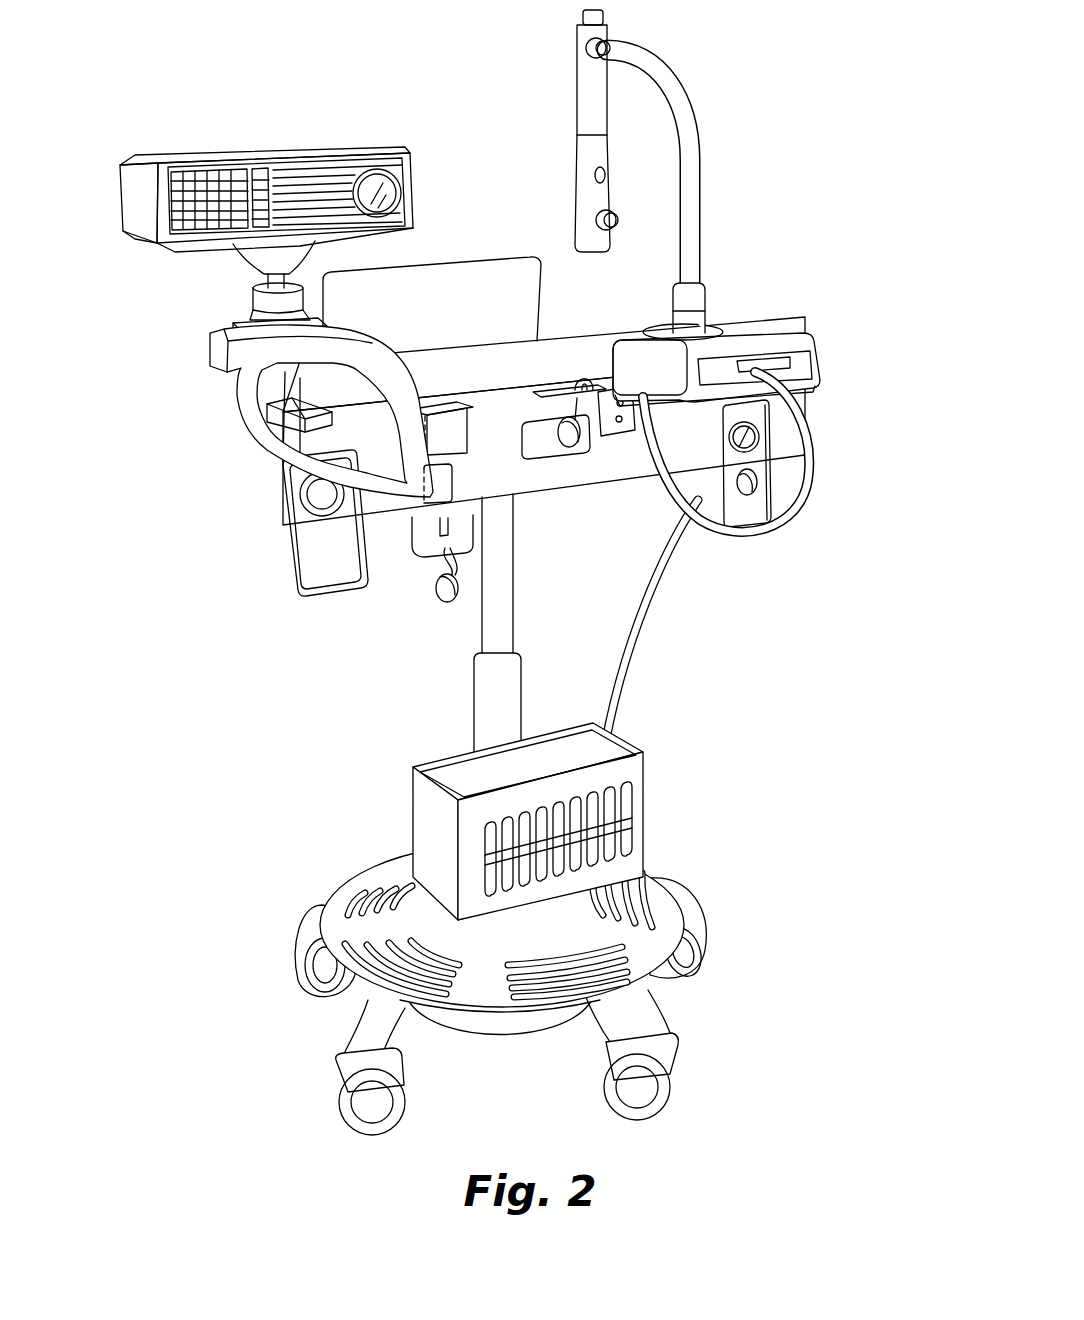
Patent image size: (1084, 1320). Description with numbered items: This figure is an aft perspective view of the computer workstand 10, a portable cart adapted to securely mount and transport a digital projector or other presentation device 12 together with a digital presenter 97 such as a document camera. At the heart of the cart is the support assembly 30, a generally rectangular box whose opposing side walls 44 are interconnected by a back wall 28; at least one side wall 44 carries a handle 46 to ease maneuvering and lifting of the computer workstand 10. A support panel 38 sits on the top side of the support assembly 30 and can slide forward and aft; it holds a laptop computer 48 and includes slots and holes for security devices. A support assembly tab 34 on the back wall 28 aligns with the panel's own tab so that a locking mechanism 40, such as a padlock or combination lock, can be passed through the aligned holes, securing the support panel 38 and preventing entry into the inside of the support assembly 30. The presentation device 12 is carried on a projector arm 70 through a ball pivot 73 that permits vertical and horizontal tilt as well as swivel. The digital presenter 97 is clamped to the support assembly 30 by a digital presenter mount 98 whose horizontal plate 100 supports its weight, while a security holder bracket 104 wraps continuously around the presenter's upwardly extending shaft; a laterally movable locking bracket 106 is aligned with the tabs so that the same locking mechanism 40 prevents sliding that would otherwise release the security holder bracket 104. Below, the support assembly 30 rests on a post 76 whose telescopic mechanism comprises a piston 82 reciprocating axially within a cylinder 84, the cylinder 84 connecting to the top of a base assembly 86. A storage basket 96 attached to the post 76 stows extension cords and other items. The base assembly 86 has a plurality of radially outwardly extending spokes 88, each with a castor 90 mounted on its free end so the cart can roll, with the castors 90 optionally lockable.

The computer workstand 10 is at (825, 578).
The presentation device 12 is at (128, 182).
The back wall 28 is at (544, 441).
The support assembly 30 is at (240, 489).
The support assembly tab 34 is at (548, 388).
The support panel 38 is at (544, 364).
The locking mechanism 40 is at (565, 458).
The side wall 44 is at (325, 484).
The handle 46 is at (290, 410).
The laptop computer 48 is at (432, 303).
The projector arm 70 is at (233, 366).
The ball pivot 73 is at (258, 284).
The post 76 is at (432, 691).
The piston 82 is at (516, 620).
The cylinder 84 is at (521, 702).
The base assembly 86 is at (758, 945).
The spoke 88 is at (320, 915).
The castor 90 is at (355, 1118).
The storage basket 96 is at (425, 815).
The digital presenter 97 is at (577, 98).
The digital presenter mount 98 is at (840, 375).
The horizontal plate 100 is at (816, 385).
The security holder bracket 104 is at (706, 325).
The locking bracket 106 is at (604, 370).